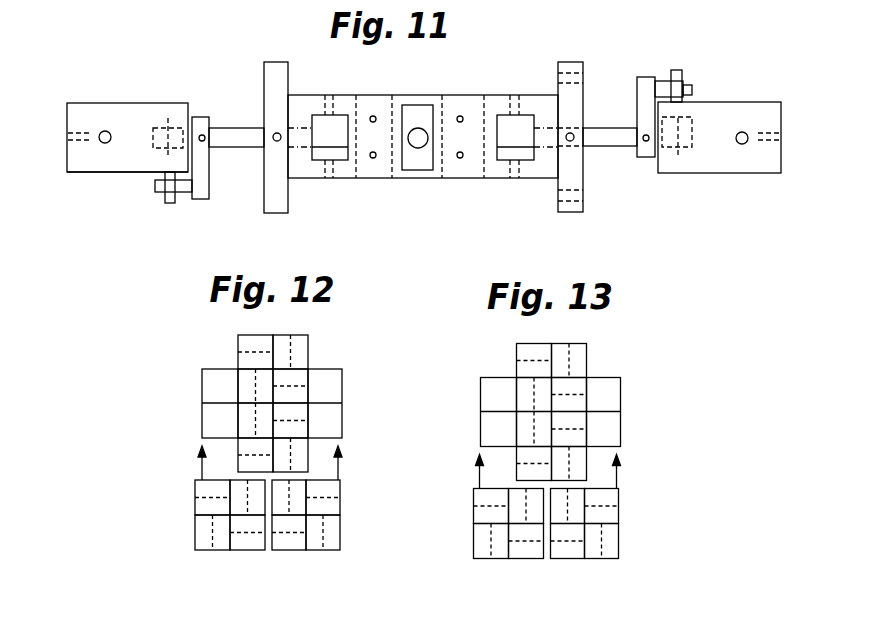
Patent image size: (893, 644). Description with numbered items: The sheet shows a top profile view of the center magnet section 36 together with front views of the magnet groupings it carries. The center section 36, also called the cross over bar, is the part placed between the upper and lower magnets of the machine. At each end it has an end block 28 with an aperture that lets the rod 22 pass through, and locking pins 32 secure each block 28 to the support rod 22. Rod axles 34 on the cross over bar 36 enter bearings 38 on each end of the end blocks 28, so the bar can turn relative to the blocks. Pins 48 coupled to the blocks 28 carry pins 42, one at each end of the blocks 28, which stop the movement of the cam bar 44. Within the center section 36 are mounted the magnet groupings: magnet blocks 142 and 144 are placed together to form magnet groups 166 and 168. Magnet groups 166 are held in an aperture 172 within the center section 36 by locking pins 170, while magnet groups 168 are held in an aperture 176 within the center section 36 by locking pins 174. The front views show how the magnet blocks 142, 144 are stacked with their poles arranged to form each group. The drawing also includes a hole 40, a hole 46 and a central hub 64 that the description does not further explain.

In FIG. 11, the rod 22 is at (103, 131).
In FIG. 11, the end block 28 is at (107, 172).
In FIG. 11, the locking pin 32 is at (780, 133).
In FIG. 11, the rod axle 34 is at (612, 148).
In FIG. 11, the center magnet section 36 is at (598, 45).
In FIG. 11, the bearing 38 is at (665, 157).
In FIG. 11, the pivot hole 40 is at (278, 132).
In FIG. 11, the pin 42 is at (180, 192).
In FIG. 11, the cam bar 44 is at (203, 116).
In FIG. 11, the plate hole 46 is at (203, 141).
In FIG. 11, the pin 48 is at (157, 192).
In FIG. 11, the central hub 64 is at (418, 128).
In FIG. 12, the magnet block 142 is at (207, 550).
In FIG. 13, the magnet block 142 is at (546, 498).
In FIG. 12, the magnet block 144 is at (193, 574).
In FIG. 13, the magnet block 144 is at (606, 448).
In FIG. 12, the magnet group 166 is at (158, 337).
In FIG. 13, the magnet group 166 is at (591, 419).
In FIG. 12, the magnet group 168 is at (262, 470).
In FIG. 13, the magnet group 168 is at (546, 469).
In FIG. 11, the locking pin 170 is at (325, 165).
In FIG. 11, the aperture 172 is at (423, 137).
In FIG. 11, the locking pin 174 is at (373, 162).
In FIG. 11, the aperture 176 is at (375, 100).